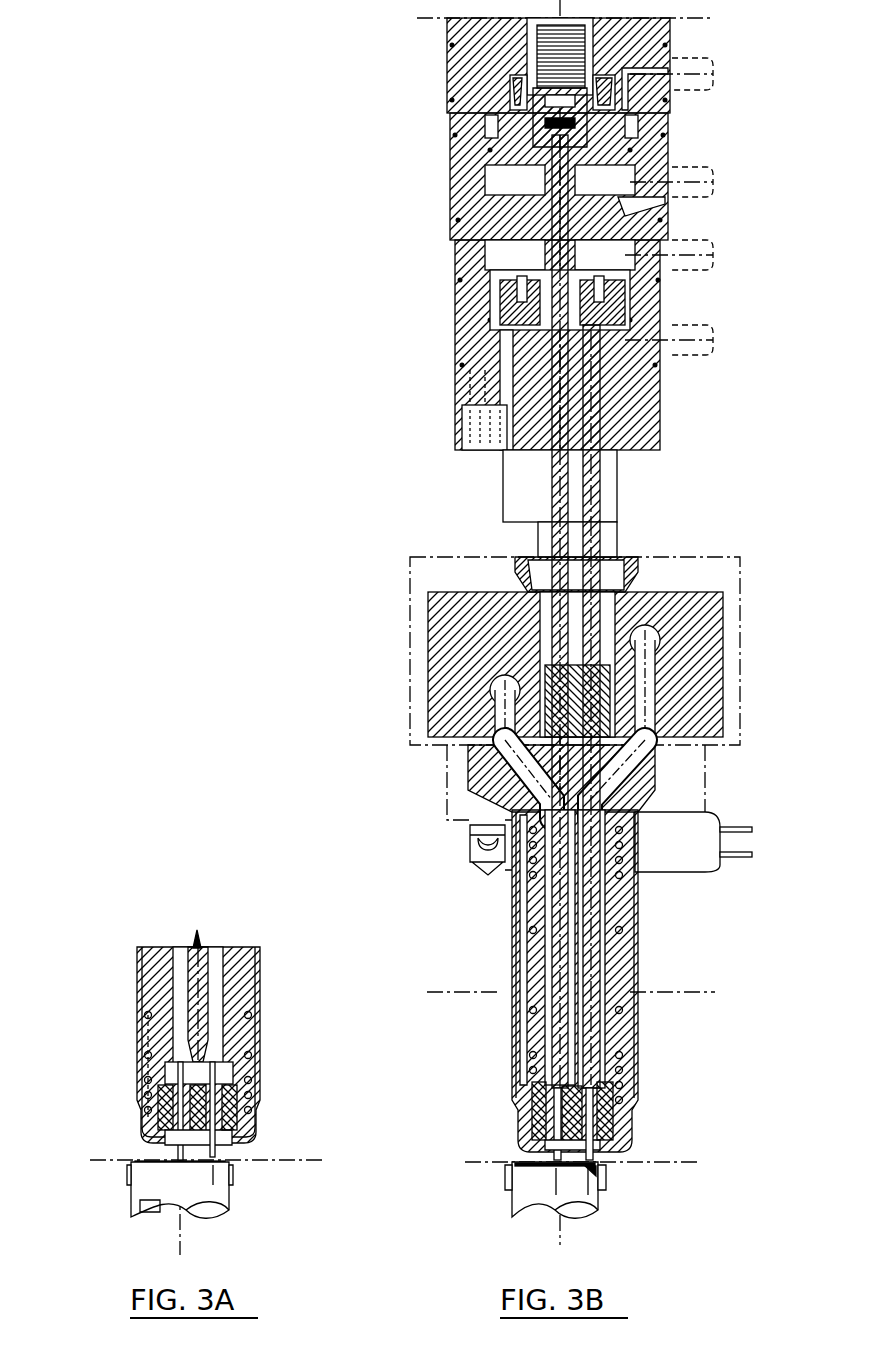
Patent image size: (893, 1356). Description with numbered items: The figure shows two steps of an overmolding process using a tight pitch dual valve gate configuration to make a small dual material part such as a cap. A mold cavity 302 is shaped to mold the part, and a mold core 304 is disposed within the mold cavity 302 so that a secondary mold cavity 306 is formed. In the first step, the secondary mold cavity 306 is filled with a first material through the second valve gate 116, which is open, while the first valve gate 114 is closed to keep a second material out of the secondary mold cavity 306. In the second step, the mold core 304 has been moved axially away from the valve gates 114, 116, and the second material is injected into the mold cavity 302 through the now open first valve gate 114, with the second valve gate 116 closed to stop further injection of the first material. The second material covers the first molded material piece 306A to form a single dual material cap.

In FIG. 3B, the first valve gate 114 is at (545, 1158).
In FIG. 3A, the first valve gate 114 is at (165, 1153).
In FIG. 3B, the second valve gate 116 is at (602, 1158).
In FIG. 3A, the second valve gate 116 is at (225, 1158).
In FIG. 3B, the mold cavity 302 is at (615, 1163).
In FIG. 3A, the mold cavity 302 is at (130, 1175).
In FIG. 3B, the mold core 304 is at (520, 1180).
In FIG. 3A, the mold core 304 is at (140, 1203).
In FIG. 3A, the secondary mold cavity 306 is at (152, 1159).
In FIG. 3B, the first molded material piece 306A is at (592, 1170).